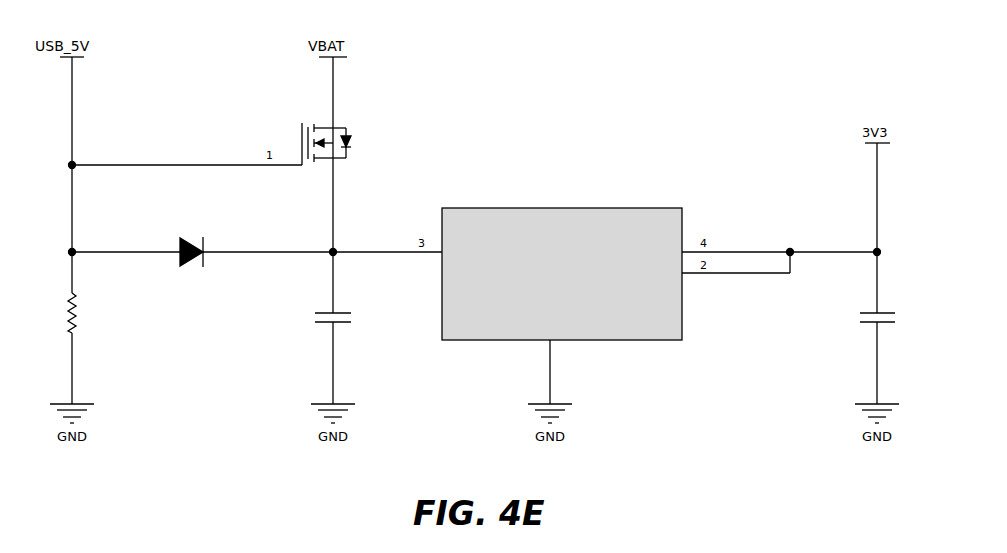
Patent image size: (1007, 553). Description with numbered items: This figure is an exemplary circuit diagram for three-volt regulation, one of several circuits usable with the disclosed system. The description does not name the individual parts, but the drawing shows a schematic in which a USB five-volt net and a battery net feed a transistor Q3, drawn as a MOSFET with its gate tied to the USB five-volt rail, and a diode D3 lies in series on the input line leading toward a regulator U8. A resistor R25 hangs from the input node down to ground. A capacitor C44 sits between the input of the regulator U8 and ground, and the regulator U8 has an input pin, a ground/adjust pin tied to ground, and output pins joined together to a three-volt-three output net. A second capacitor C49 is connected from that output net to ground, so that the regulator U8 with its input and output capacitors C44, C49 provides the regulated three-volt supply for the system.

The P-channel MOSFET AO3401A Q3 is at (365, 144).
The Schottky diode SB340HE3_A/H D3 is at (225, 241).
The resistor 100K R25 is at (88, 313).
The capacitor 22uF 10V C44 is at (351, 351).
The voltage regulator AMS1117-33 U8 is at (562, 297).
The capacitor 22uF 10V C49 is at (895, 351).